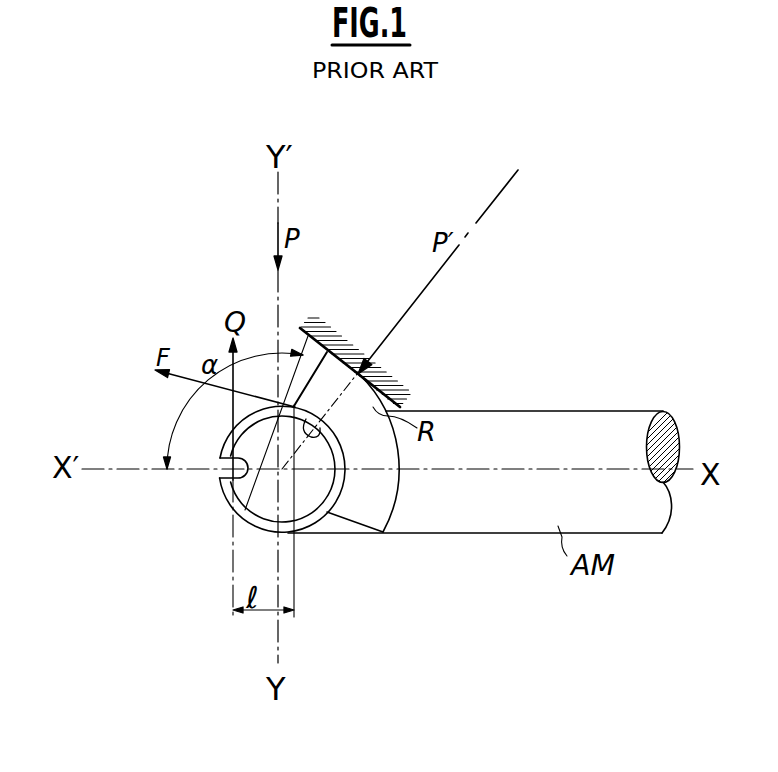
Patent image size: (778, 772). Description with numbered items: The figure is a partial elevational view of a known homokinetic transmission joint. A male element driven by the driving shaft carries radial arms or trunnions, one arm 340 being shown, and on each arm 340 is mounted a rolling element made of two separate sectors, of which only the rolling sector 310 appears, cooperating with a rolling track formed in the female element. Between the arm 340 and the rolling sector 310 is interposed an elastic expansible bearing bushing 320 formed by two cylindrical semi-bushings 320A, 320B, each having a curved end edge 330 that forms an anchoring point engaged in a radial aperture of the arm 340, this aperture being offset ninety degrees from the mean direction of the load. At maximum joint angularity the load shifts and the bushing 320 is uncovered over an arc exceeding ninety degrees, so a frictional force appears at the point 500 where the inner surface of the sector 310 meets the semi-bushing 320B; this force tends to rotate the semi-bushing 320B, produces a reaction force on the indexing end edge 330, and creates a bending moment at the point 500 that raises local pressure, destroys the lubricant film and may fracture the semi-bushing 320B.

The rolling sector 310 is at (414, 487).
The bushing 320 is at (294, 464).
The semi-bushing 320A is at (310, 518).
The semi-bushing 320B is at (250, 418).
The curved end edge 330 is at (222, 463).
The arm 340 is at (247, 493).
The point 500 is at (322, 436).